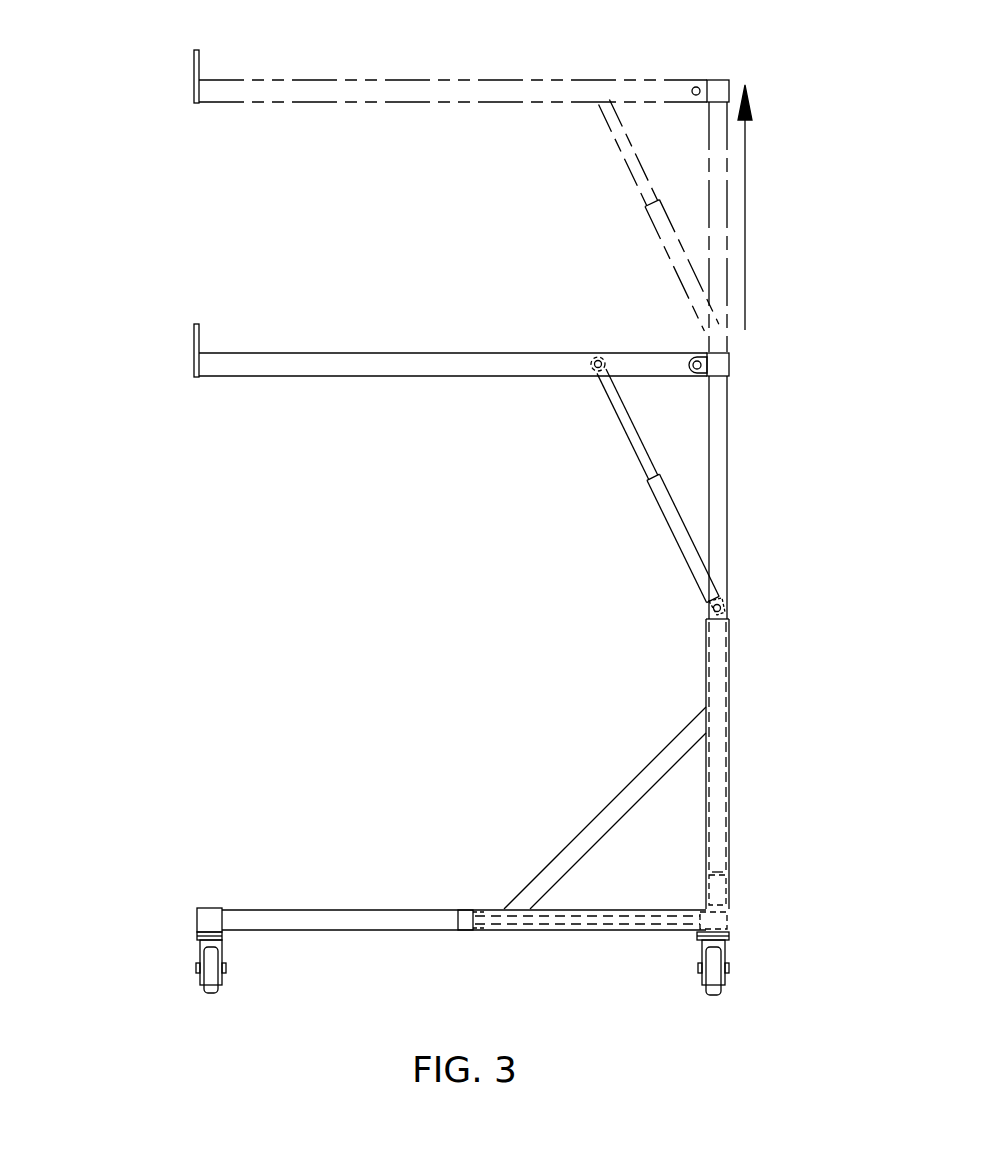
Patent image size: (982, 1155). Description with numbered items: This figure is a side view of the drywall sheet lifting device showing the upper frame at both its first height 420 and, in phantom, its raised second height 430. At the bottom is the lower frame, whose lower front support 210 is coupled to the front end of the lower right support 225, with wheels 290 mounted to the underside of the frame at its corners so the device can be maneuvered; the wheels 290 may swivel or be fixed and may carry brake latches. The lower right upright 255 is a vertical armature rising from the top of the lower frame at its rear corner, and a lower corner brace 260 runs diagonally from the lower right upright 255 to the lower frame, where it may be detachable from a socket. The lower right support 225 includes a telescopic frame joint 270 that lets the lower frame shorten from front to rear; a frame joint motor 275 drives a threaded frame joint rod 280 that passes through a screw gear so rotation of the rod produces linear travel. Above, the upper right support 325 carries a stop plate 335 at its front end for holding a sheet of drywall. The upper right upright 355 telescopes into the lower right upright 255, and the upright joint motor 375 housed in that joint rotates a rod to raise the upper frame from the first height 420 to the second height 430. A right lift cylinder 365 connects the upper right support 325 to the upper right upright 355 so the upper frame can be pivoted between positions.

The lower front support 210 is at (215, 918).
The lower right support 225 is at (352, 910).
The lower right upright 255 is at (729, 872).
The lower corner brace 260 is at (588, 838).
The telescopic frame joint 270 is at (458, 932).
The frame joint motor 275 is at (712, 922).
The frame joint rod 280 is at (580, 924).
The wheels 290 is at (210, 990).
The upper right support 325 is at (378, 368).
The stop plate 335 is at (197, 324).
The upper right upright 355 is at (723, 495).
The right lift cylinder 365 is at (681, 528).
The upright joint motor 375 is at (716, 890).
The first height 420 is at (182, 360).
The second height 430 is at (182, 88).